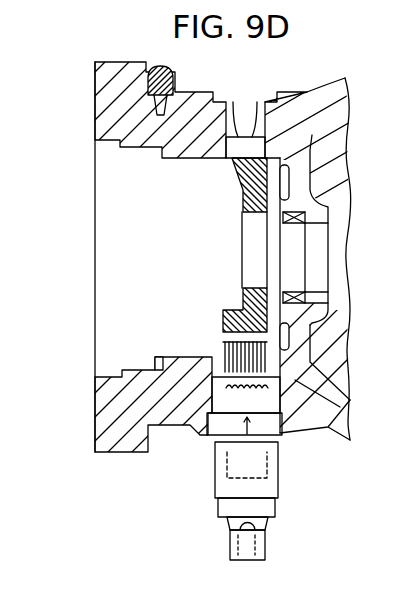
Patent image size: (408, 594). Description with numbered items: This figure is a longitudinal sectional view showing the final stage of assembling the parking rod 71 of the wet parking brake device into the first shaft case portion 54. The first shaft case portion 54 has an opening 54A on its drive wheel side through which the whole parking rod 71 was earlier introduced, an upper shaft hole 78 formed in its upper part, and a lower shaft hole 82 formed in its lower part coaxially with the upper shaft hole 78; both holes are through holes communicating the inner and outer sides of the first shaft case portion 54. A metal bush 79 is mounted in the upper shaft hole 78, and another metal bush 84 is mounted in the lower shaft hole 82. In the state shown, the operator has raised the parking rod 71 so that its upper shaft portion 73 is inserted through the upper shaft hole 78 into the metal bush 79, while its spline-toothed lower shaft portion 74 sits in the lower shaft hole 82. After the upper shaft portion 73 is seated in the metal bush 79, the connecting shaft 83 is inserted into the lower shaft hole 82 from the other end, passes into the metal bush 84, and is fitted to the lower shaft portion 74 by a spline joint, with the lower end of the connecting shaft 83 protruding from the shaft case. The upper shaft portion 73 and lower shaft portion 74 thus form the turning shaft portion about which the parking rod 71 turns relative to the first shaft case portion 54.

The first shaft case portion 54 is at (312, 84).
The opening 54A is at (102, 282).
The parking rod 71 is at (240, 228).
The upper shaft portion 73 is at (268, 153).
The lower shaft portion 74 is at (218, 350).
The upper shaft hole 78 is at (262, 118).
The metal bush 79 is at (238, 135).
The lower shaft hole 82 is at (283, 358).
The connecting shaft 83 is at (279, 480).
The metal bush 84 is at (252, 392).